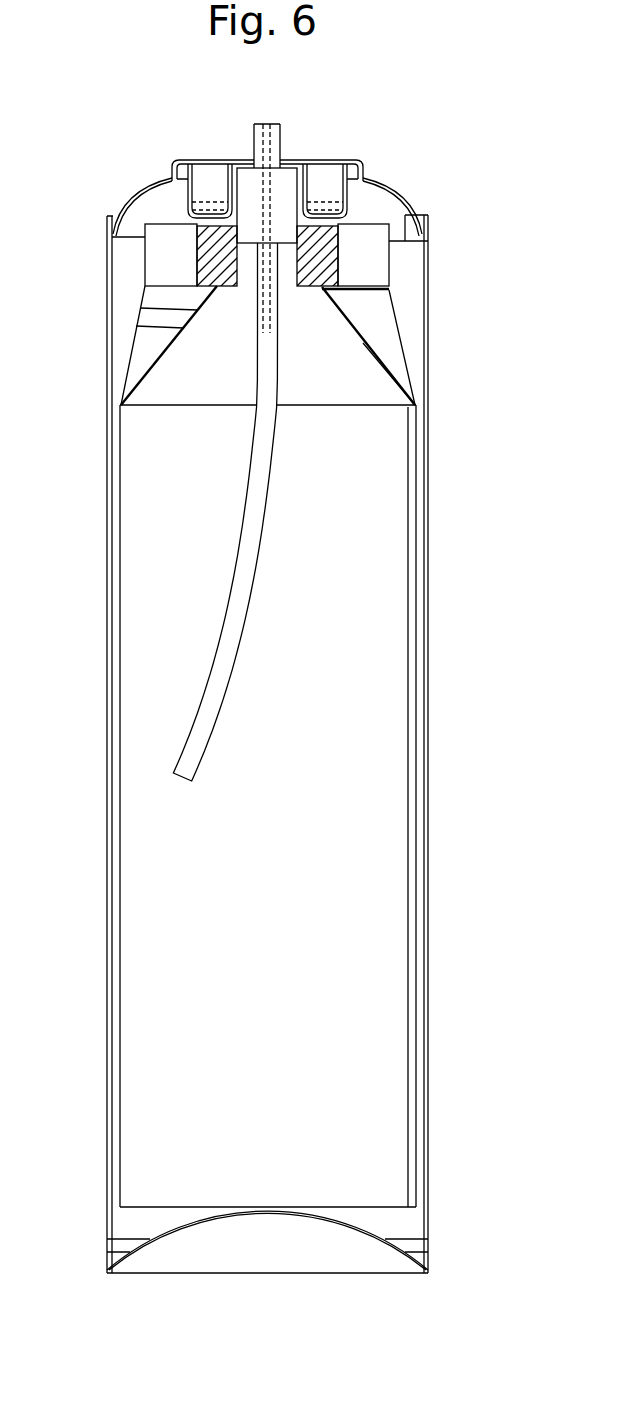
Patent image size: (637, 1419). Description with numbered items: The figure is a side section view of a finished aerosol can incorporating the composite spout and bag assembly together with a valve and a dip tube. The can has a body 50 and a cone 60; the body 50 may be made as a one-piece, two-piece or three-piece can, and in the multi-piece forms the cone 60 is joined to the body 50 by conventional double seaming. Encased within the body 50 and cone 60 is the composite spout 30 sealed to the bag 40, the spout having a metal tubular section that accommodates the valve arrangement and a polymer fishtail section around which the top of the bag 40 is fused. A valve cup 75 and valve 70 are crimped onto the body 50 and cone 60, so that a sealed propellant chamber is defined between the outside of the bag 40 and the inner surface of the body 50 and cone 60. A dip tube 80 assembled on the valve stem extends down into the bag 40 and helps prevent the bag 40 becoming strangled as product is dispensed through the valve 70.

The composite spout 30 is at (158, 259).
The bag 40 is at (137, 353).
The body 50 is at (428, 916).
The cone 60 is at (385, 197).
The valve 70 is at (285, 182).
The valve cup 75 is at (205, 200).
The dip tube 80 is at (225, 620).